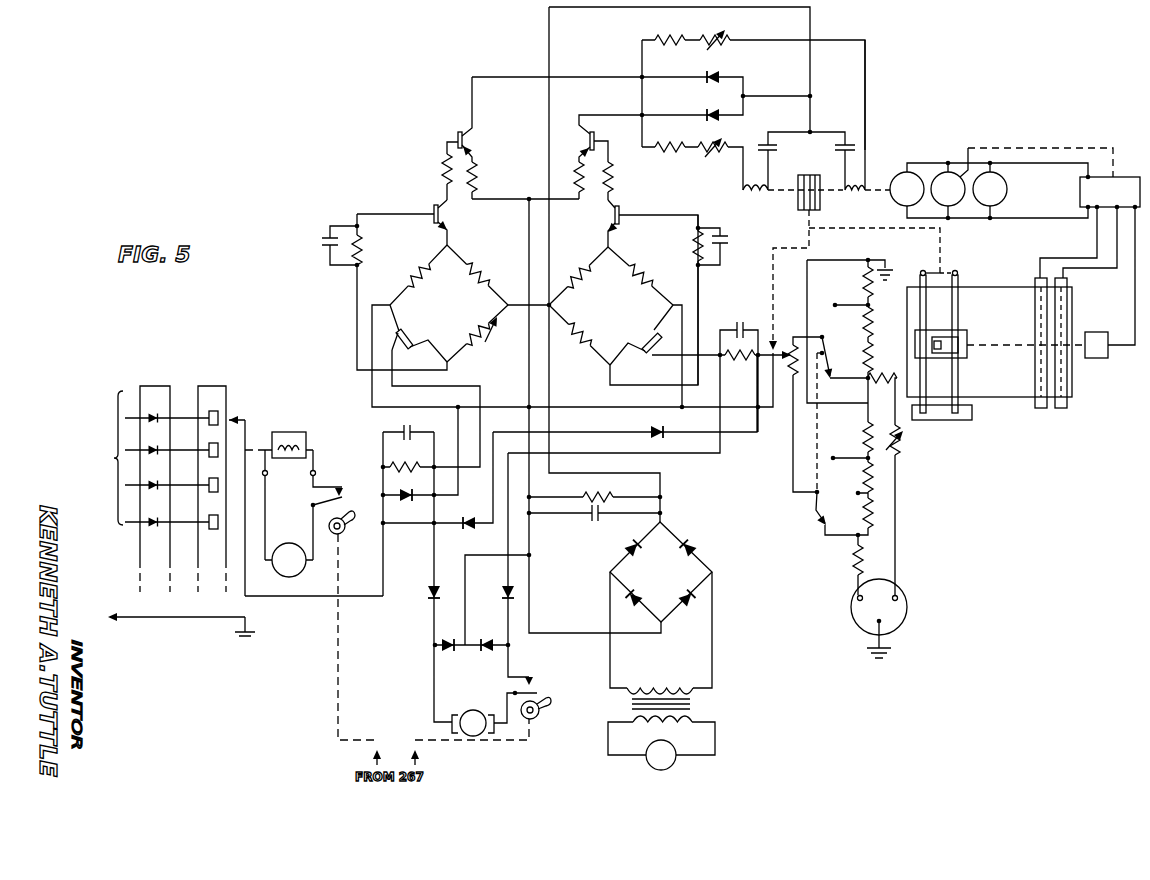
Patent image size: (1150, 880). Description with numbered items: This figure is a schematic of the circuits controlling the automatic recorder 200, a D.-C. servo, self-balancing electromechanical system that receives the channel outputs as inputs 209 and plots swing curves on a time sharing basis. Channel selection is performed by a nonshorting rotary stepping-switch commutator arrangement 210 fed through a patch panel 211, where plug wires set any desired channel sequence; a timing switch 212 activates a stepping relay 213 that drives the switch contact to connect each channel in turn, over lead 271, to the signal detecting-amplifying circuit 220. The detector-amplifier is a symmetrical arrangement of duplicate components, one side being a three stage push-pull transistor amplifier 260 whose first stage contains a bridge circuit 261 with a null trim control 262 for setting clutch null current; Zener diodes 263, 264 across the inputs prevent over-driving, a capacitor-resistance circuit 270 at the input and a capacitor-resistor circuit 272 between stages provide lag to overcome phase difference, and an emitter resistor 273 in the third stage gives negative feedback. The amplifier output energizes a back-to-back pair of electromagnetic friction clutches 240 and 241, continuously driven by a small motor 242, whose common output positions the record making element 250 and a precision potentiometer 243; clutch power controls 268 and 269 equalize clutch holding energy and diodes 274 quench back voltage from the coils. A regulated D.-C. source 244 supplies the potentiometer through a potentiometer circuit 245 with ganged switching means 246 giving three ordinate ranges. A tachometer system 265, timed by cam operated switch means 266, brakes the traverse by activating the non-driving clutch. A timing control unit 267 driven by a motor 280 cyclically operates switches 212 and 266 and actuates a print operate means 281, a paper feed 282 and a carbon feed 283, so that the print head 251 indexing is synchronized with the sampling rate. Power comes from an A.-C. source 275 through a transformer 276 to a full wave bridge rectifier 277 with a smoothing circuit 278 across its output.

The automatic recorder 200 is at (934, 428).
The inputs 209 is at (118, 395).
The rotary stepping-switch commutator arrangement 210 is at (240, 408).
The patch panel 211 is at (165, 386).
The timing switch 212 is at (358, 485).
The stepping relay 213 is at (290, 432).
The signal detecting-amplifying circuit 220 is at (426, 195).
The electromagnetic friction clutch 240 is at (781, 193).
The electromagnetic friction clutch 241 is at (833, 187).
The small motor 242 is at (898, 200).
The precision potentiometer 243 is at (793, 345).
The regulated D.-C. source 244 is at (905, 606).
The potentiometer circuit 245 is at (878, 403).
The ganged switching means 246 is at (818, 456).
The record making element 250 is at (940, 330).
The print head 251 is at (942, 355).
The transistor amplifier 260 is at (506, 243).
The bridge circuit 261 is at (460, 311).
The null trim control 262 is at (495, 338).
The Zener diode 263 is at (468, 530).
The Zener diode 264 is at (655, 438).
The tachometer system 265 is at (482, 687).
The cam operated switch means 266 is at (540, 706).
The timing control unit 267 is at (1124, 201).
The clutch power control 268 is at (727, 44).
The clutch power control 269 is at (712, 156).
The capacitor-resistance circuit 270 is at (402, 452).
The lead 271 is at (357, 598).
The capacitor-resistor circuit 272 is at (348, 268).
The emitter resistor 273 is at (478, 185).
The diodes 274 is at (710, 104).
The A.-C. source 275 is at (672, 762).
The transformer 276 is at (690, 705).
The full wave bridge rectifier 277 is at (675, 580).
The smoothing circuit 278 is at (661, 505).
The motor 280 is at (945, 171).
The print operate means 281 is at (1098, 358).
The paper feed 282 is at (1035, 284).
The carbon feed 283 is at (1068, 283).